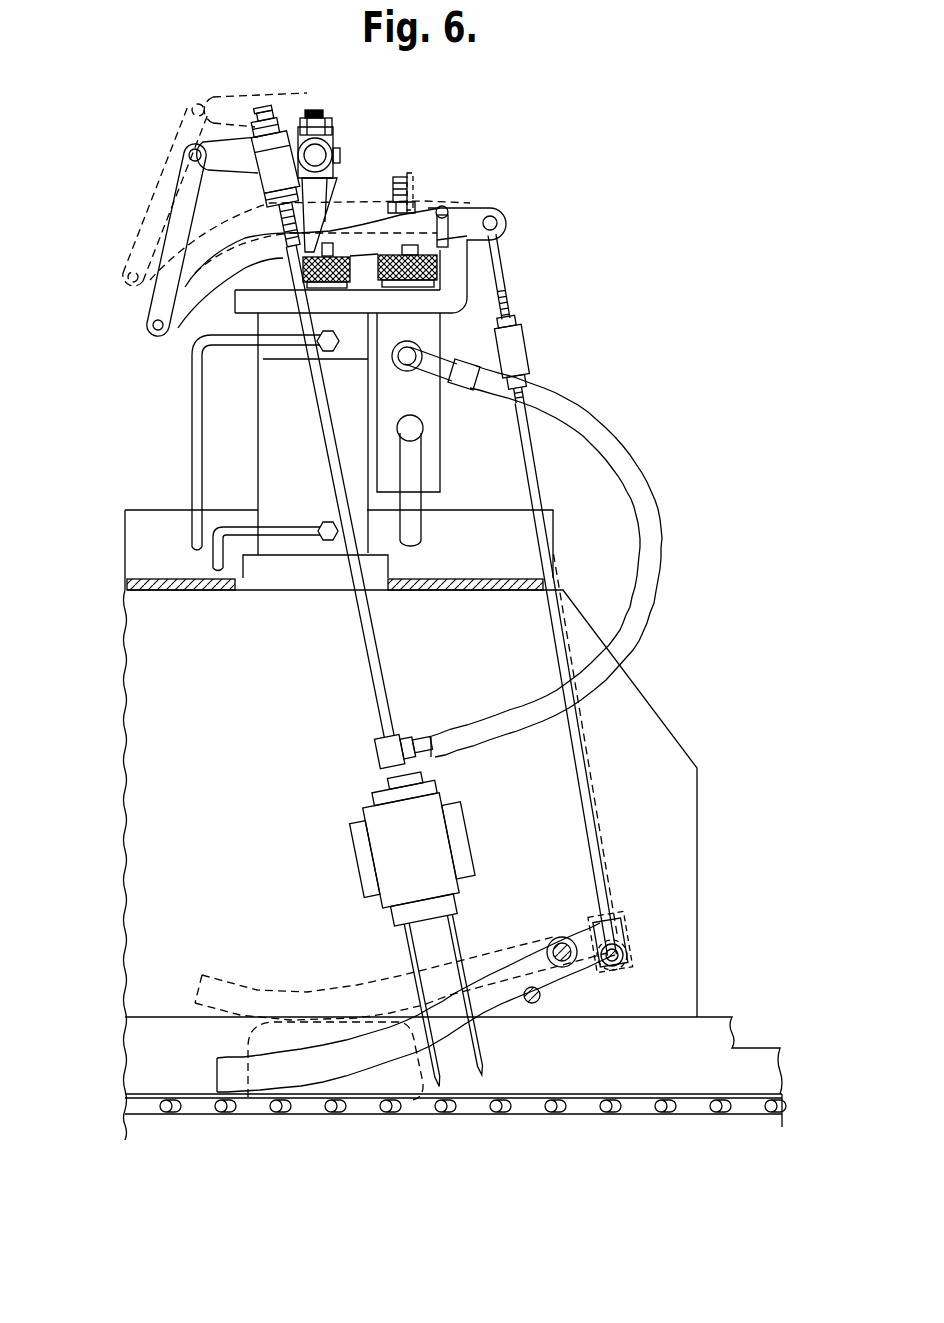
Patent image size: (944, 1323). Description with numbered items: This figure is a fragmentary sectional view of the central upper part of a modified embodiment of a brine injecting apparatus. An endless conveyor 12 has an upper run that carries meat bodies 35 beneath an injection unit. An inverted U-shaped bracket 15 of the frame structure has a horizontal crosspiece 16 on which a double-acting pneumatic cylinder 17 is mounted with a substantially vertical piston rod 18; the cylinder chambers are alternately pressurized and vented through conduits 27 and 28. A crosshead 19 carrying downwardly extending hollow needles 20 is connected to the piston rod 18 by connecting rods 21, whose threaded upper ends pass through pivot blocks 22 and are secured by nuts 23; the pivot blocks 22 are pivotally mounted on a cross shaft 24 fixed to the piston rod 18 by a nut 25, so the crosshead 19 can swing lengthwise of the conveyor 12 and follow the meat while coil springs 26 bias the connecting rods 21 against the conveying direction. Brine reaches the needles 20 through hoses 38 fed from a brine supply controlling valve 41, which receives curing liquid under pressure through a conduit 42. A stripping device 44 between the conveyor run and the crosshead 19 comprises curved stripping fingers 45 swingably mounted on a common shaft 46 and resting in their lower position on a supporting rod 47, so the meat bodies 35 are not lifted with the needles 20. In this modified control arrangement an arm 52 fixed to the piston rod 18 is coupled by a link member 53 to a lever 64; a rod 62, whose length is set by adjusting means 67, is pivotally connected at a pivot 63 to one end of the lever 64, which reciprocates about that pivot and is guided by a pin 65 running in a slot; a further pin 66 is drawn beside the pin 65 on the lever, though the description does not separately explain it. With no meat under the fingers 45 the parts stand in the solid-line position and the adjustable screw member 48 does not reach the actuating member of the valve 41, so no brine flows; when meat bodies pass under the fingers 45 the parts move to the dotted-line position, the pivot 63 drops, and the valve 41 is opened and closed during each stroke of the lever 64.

The endless conveyor 12 is at (645, 1105).
The inversed U-shaped bracket 15 is at (128, 877).
The crosspiece 16 is at (128, 580).
The double-acting pneumatic cylinder 17 is at (268, 436).
The piston rod 18 is at (325, 192).
The crosshead 19 is at (372, 864).
The hollow needles 20 is at (488, 1050).
The connecting rods 21 is at (368, 674).
The pivot block 22 is at (278, 148).
The nuts 23 is at (258, 122).
The cross shaft 24 is at (322, 153).
The nut 25 is at (320, 130).
The coil springs 26 is at (322, 200).
The conduit 27 is at (192, 385).
The conduit 28 is at (236, 528).
The meat bodies 35 is at (375, 1085).
The hoses 38 is at (654, 502).
The brine supply controlling valve 41 is at (432, 333).
The conduit 42 is at (424, 502).
The stripping device 44 is at (524, 963).
The stripping fingers 45 is at (308, 1072).
The common shaft 46 is at (556, 937).
The supporting rod 47 is at (540, 1003).
The adjustable screw member 48 is at (400, 176).
The arm 52 is at (220, 142).
The link member 53 is at (165, 240).
The rod 62 is at (560, 616).
The pivot 63 is at (498, 222).
The lever 64 is at (182, 302).
The pin 65 is at (462, 212).
The pin 66 is at (445, 208).
The adjusting means 67 is at (520, 350).